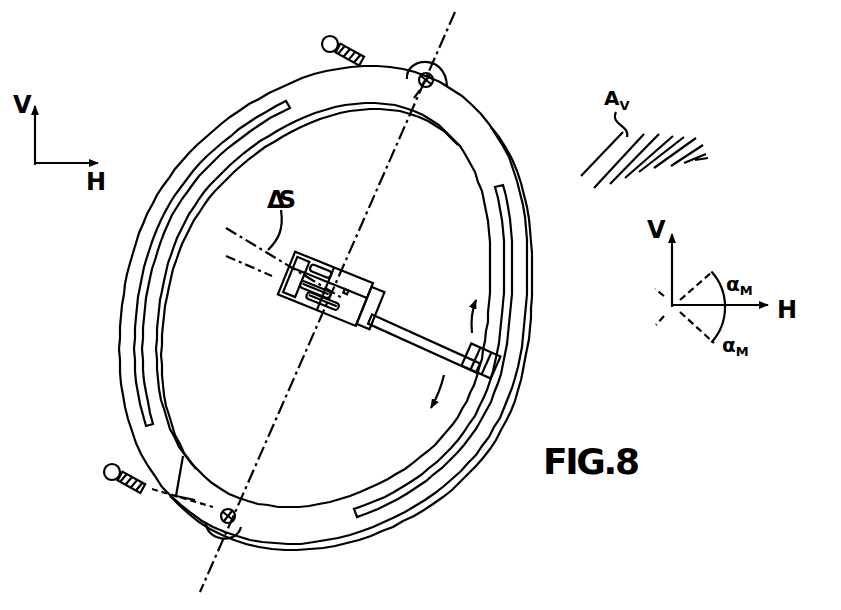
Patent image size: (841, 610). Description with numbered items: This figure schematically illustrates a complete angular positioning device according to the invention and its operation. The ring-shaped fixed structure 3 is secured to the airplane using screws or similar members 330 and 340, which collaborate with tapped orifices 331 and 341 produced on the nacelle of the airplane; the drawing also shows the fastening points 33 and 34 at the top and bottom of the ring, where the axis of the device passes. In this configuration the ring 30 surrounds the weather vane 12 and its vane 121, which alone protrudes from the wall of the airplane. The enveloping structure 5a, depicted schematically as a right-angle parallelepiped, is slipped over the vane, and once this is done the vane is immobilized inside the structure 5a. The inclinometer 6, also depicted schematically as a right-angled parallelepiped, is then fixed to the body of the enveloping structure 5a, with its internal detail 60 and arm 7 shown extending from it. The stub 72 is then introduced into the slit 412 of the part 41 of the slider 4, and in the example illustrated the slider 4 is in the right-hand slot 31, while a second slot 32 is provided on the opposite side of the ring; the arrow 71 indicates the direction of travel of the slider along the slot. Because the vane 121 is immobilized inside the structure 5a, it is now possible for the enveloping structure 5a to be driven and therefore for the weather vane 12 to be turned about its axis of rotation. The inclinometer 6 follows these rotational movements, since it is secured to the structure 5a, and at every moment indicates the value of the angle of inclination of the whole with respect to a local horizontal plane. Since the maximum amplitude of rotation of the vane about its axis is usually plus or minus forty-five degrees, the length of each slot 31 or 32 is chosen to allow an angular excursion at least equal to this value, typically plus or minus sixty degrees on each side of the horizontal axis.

The ring-shaped fixed structure 3 is at (114, 287).
The ring 30 is at (288, 533).
The right-hand slot 31 is at (426, 455).
The slot 32 is at (136, 385).
The upper pivot screw 33 is at (438, 64).
The tapped orifice 331 is at (394, 64).
The screw 330 is at (322, 48).
The lower pivot screw 34 is at (211, 515).
The tapped orifice 341 is at (183, 454).
The screw 340 is at (110, 465).
The inclinometer 6 is at (364, 270).
The housing insert 60 is at (305, 252).
The weather vane 12 is at (268, 300).
The vane 121 is at (299, 296).
The enveloping structure 5a is at (326, 317).
The connecting rod 7 is at (414, 350).
The direction arrow up 71 is at (409, 330).
The stub 72 is at (463, 425).
The slider 4 is at (512, 362).
The slit 412 is at (478, 343).
The part of the slider 41 is at (499, 377).